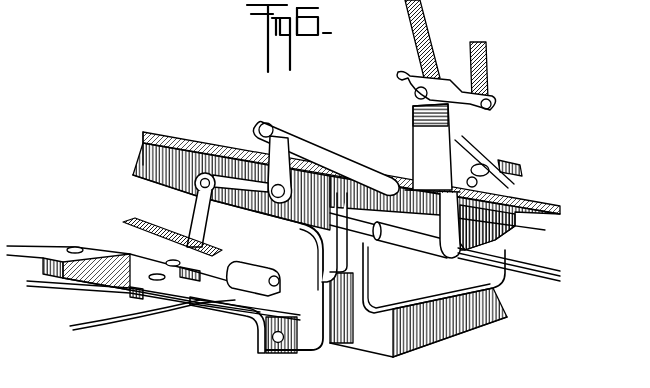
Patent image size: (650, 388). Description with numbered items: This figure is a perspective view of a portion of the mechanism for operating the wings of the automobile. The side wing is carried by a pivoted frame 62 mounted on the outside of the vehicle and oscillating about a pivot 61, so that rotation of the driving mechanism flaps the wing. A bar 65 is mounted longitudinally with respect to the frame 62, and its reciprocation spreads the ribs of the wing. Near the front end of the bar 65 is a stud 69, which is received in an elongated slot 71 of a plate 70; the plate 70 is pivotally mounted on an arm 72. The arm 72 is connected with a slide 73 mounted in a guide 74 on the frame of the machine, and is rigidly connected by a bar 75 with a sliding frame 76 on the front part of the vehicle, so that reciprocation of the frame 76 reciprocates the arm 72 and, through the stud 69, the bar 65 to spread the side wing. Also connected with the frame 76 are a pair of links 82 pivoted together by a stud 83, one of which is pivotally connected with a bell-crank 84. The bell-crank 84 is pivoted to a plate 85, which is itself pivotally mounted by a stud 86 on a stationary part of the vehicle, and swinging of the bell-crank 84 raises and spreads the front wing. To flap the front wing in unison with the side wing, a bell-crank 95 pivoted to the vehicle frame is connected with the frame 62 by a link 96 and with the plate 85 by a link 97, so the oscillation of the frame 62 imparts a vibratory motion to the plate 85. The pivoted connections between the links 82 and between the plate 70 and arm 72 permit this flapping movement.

The pivot 61 is at (279, 345).
The pivoted frame 62 is at (130, 290).
The bar 65 is at (145, 236).
The stud 69 is at (266, 264).
The plate 70 is at (240, 280).
The elongated slot 71 is at (246, 266).
The arm 72 is at (348, 268).
The slide 73 is at (526, 275).
The guide 74 is at (432, 248).
The bar 75 is at (393, 175).
The sliding frame 76 is at (510, 165).
The links 82 is at (470, 152).
The stud 83 is at (483, 168).
The bell-crank 84 is at (437, 78).
The plate 85 is at (417, 128).
The stud 86 is at (480, 182).
The bell-crank 95 is at (240, 176).
The link 96 is at (201, 229).
The link 97 is at (312, 147).